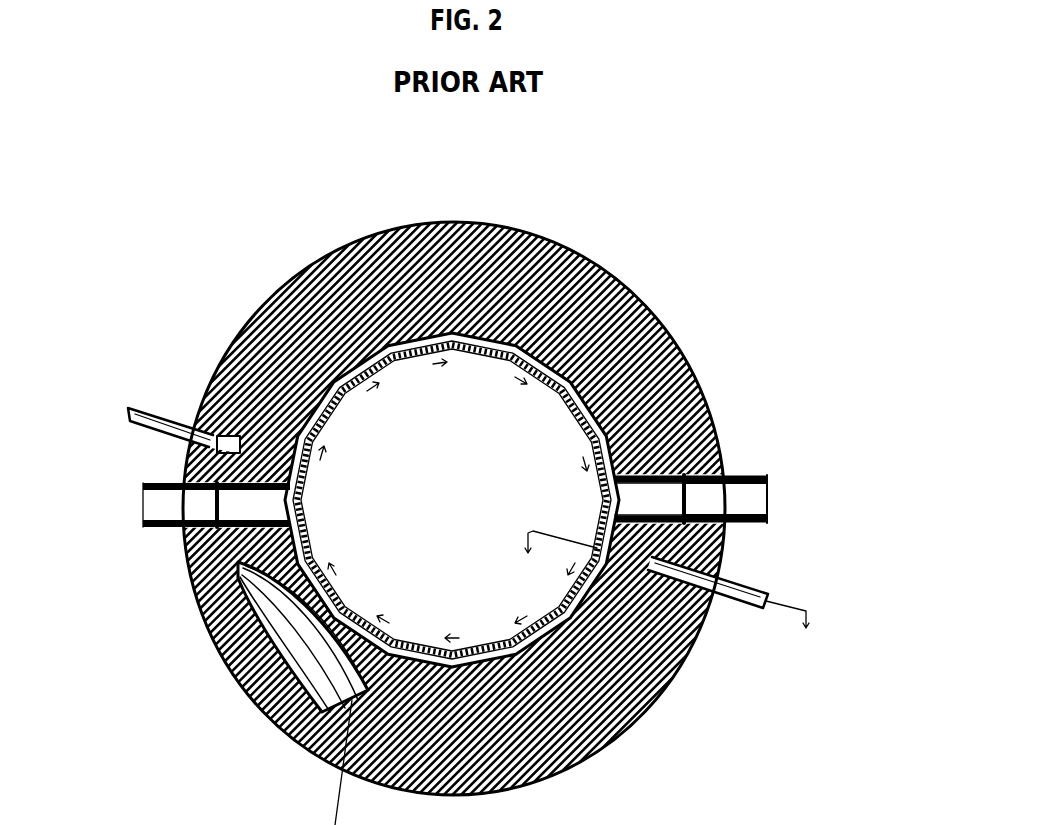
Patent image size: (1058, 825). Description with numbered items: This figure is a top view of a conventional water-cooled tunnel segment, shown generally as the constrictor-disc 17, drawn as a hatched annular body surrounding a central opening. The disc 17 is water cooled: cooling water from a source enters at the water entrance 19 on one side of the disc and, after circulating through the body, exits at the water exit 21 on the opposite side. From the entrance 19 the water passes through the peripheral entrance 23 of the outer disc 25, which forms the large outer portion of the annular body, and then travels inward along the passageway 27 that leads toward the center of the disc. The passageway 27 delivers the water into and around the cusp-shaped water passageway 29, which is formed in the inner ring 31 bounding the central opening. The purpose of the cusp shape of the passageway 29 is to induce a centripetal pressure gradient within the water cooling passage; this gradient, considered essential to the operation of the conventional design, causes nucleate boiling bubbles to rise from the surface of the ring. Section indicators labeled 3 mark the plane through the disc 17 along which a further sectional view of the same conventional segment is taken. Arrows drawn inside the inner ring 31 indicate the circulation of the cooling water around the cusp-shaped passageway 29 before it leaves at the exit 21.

The constrictor-disc 17 is at (529, 412).
The water entrance 19 is at (777, 487).
The water exit 21 is at (136, 509).
The peripheral entrance 23 is at (745, 463).
The outer disc 25 is at (422, 215).
The passageway 27 is at (648, 488).
The cusp-shaped water passageway 29 is at (452, 500).
The inner ring 31 is at (452, 500).
The section line 3- 3 is at (658, 598).